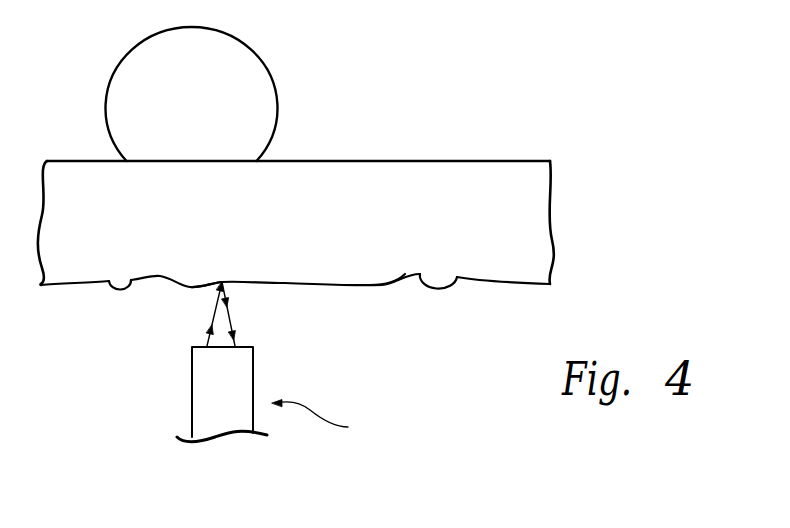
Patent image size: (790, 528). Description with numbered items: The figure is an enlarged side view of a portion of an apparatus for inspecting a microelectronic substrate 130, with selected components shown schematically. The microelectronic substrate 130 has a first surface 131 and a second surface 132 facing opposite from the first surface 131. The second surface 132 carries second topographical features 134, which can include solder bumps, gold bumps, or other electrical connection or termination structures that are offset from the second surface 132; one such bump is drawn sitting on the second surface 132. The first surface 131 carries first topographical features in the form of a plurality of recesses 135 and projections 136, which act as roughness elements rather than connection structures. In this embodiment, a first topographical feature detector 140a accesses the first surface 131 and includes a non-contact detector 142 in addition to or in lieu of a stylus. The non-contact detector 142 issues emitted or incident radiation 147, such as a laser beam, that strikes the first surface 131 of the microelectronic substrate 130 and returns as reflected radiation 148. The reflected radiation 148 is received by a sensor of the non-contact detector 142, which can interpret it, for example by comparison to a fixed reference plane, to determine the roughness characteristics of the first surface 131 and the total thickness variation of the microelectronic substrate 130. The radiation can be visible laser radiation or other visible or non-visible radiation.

The microelectronic substrate 130 is at (537, 193).
The first surface 131 is at (517, 284).
The second surface 132 is at (437, 161).
The second topographical features 134 is at (255, 80).
The recesses 135 is at (111, 280).
The projections 136 is at (213, 285).
The first topographical feature detector 140a is at (335, 421).
The non-contact detector 142 is at (192, 395).
The incident radiation 147 is at (214, 309).
The reflected radiation 148 is at (233, 323).